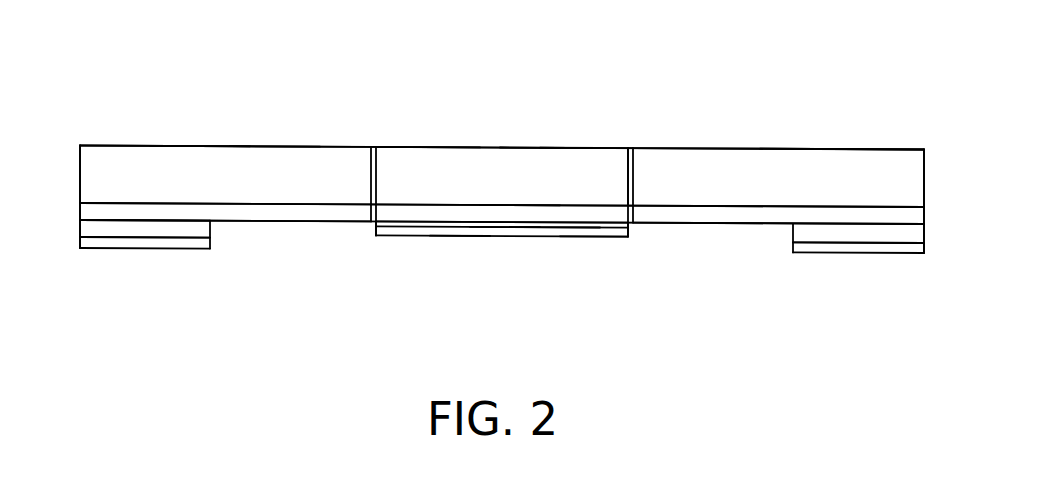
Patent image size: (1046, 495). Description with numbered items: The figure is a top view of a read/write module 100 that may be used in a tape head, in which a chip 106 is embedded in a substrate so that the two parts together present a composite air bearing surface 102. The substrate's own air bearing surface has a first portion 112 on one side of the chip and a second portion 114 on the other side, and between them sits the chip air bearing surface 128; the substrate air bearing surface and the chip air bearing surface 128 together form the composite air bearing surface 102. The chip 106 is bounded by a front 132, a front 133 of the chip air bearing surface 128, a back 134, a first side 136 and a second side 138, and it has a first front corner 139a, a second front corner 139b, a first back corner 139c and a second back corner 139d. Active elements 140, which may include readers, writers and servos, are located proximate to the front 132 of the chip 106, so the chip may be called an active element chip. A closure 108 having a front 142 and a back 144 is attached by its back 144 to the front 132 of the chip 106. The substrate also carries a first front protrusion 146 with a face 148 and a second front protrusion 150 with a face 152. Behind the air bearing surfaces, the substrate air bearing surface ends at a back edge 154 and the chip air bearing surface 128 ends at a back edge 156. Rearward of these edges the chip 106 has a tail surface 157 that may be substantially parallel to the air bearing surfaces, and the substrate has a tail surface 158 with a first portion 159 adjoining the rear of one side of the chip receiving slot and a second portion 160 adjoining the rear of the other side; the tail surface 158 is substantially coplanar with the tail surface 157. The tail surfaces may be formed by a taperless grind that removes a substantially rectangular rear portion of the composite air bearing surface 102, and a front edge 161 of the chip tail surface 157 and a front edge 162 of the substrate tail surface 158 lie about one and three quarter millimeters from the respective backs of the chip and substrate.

The module 100 is at (786, 76).
The composite air bearing surface 102 is at (142, 210).
The chip 106 is at (510, 180).
The closure 108 is at (408, 232).
The first portion 112 is at (277, 213).
The second portion 114 is at (737, 218).
The chip air bearing surface 128 is at (515, 212).
The front of the chip 132 is at (552, 228).
The front of the chip air bearing surface 133 is at (425, 222).
The back of the chip 134 is at (562, 148).
The first side of the chip 136 is at (380, 177).
The second side of the chip 138 is at (627, 180).
The first front corner 139a is at (376, 227).
The second front corner 139b is at (629, 232).
The first back corner 139c is at (377, 150).
The second back corner 139d is at (630, 148).
The active elements 140 is at (588, 227).
The front of the closure 142 is at (458, 235).
The back of the closure 144 is at (502, 227).
The first front protrusion 146 is at (209, 231).
The face of the first front protrusion 148 is at (142, 248).
The second front protrusion 150 is at (793, 235).
The face of the second front protrusion 152 is at (850, 252).
The back edge of the substrate air bearing surface 154 is at (763, 207).
The back edge of the chip air bearing surface 156 is at (452, 207).
The chip tail surface 157 is at (530, 168).
The substrate tail surface 158 is at (200, 177).
The first portion of the substrate tail surface 159 is at (270, 178).
The second portion of the substrate tail surface 160 is at (783, 180).
The front edge of the chip tail surface 161 is at (553, 205).
The front edge of the substrate tail surface 162 is at (850, 207).